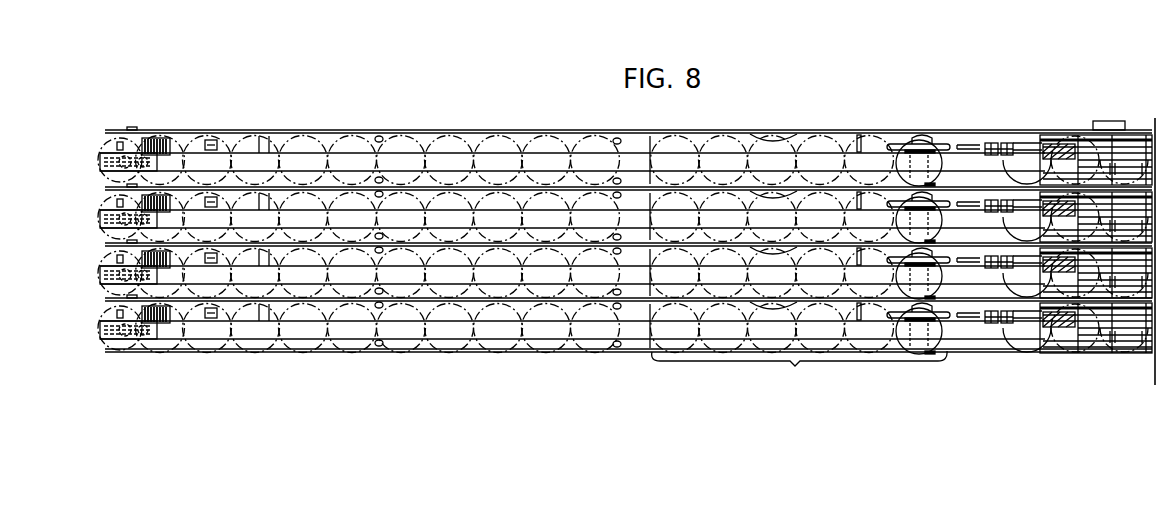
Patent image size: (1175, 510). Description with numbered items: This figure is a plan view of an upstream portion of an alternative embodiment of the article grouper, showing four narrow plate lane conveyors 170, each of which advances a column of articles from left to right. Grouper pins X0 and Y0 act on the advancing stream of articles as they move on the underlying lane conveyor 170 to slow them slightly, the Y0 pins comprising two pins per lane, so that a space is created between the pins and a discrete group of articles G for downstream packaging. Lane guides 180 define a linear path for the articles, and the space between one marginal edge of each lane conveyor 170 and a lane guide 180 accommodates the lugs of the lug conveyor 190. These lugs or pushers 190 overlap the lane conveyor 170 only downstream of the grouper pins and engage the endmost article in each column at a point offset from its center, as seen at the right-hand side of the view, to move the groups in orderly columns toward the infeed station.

The grouper pin X0 is at (399, 360).
The grouper pins Y0 is at (616, 360).
The lane conveyor 170 is at (638, 206).
The lane guide 180 is at (770, 195).
The lug conveyor 190 is at (980, 236).
The group of articles G is at (799, 367).